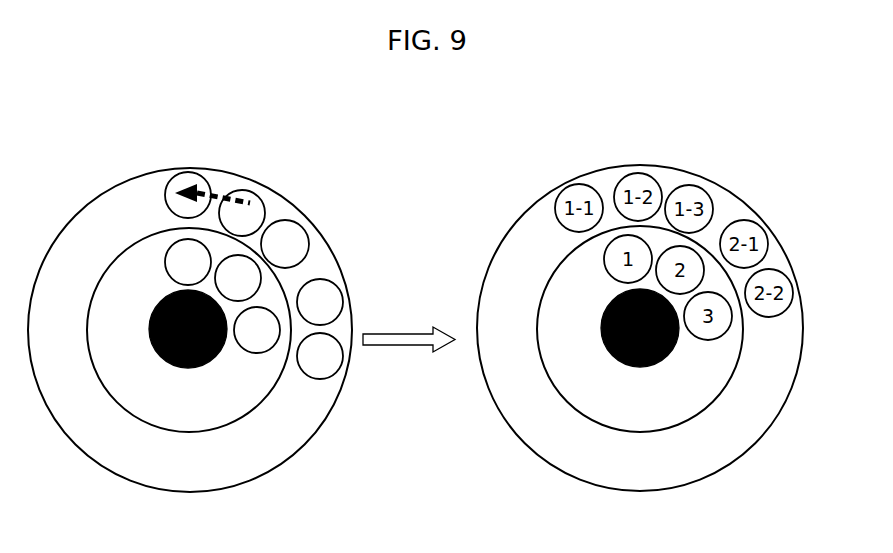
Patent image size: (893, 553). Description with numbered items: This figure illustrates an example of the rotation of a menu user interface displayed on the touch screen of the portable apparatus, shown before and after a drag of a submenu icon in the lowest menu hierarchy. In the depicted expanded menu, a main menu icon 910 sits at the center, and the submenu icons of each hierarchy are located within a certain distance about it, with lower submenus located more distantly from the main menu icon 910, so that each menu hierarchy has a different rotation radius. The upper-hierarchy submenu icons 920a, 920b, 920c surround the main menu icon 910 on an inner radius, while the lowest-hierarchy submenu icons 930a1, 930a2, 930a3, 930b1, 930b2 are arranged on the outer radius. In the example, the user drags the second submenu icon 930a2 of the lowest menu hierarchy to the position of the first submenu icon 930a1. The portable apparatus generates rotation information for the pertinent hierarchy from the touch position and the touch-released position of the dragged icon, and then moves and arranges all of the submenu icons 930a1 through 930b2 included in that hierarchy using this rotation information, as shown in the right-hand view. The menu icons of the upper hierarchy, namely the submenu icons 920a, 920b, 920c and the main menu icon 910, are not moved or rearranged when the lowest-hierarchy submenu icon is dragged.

The center (core) node 910 is at (213, 360).
The first node (1) 920a is at (168, 246).
The second node (2) 920b is at (262, 278).
The third node (3) 920c is at (270, 343).
The first submenu icon 930a1 is at (188, 172).
The second submenu icon 930a2 is at (253, 190).
The sub-node 1-3 930a3 is at (303, 226).
The sub-node 2-1 930b1 is at (343, 300).
The submenu icon 930b2 is at (338, 372).